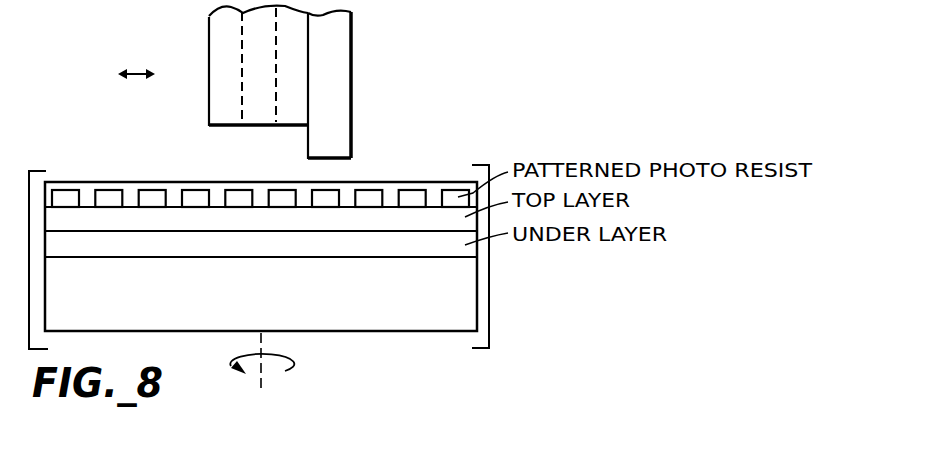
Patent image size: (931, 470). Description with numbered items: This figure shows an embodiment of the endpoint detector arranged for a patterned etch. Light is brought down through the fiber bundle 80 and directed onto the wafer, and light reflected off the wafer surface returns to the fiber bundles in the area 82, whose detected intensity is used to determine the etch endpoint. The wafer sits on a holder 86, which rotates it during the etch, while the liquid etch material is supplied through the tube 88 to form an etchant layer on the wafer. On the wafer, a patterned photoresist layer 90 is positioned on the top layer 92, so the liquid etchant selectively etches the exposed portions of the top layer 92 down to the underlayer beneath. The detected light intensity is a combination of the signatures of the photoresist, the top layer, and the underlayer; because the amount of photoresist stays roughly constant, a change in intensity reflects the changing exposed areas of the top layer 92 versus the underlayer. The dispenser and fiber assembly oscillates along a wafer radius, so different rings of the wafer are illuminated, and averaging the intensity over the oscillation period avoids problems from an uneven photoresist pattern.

The fiber bundle 80 is at (252, 40).
The area of return bundles 82 is at (293, 69).
The holder 86 is at (44, 170).
The tube 88 is at (340, 65).
The patterned photoresist layer 90 is at (415, 185).
The top layer 92 is at (345, 216).